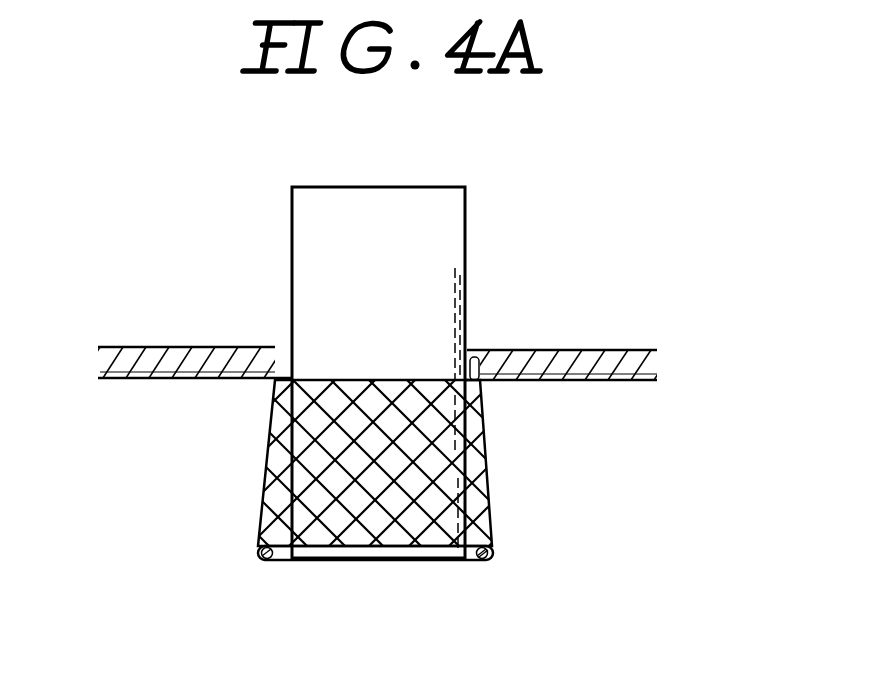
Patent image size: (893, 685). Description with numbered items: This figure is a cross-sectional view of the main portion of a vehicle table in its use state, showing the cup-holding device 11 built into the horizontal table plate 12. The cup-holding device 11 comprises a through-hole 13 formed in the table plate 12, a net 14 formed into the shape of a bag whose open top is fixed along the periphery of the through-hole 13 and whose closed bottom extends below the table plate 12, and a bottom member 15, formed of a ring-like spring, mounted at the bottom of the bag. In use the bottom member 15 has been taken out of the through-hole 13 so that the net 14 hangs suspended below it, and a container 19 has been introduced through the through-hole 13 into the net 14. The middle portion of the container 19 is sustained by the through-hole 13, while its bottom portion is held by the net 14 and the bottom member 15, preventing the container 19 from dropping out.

The cup-holding device 11 is at (450, 397).
The table plate 12 is at (527, 350).
The through-hole 13 is at (481, 392).
The net 14 is at (490, 498).
The bottom member 15 is at (413, 583).
The container 19 is at (300, 309).